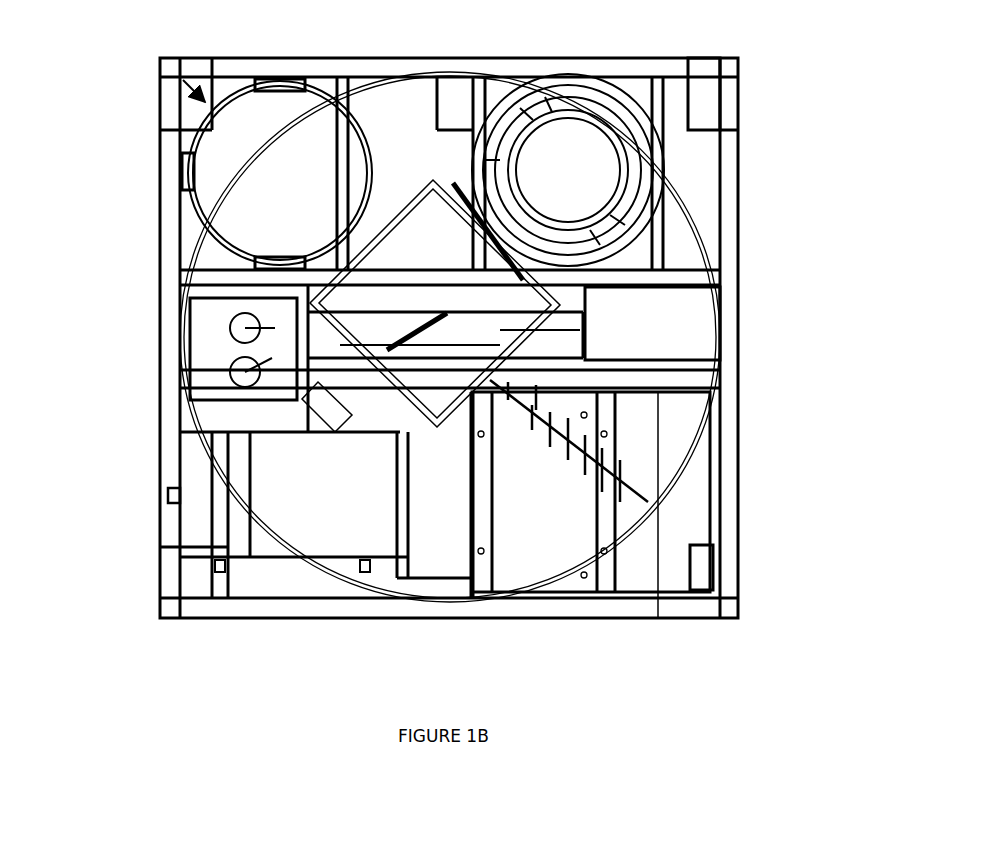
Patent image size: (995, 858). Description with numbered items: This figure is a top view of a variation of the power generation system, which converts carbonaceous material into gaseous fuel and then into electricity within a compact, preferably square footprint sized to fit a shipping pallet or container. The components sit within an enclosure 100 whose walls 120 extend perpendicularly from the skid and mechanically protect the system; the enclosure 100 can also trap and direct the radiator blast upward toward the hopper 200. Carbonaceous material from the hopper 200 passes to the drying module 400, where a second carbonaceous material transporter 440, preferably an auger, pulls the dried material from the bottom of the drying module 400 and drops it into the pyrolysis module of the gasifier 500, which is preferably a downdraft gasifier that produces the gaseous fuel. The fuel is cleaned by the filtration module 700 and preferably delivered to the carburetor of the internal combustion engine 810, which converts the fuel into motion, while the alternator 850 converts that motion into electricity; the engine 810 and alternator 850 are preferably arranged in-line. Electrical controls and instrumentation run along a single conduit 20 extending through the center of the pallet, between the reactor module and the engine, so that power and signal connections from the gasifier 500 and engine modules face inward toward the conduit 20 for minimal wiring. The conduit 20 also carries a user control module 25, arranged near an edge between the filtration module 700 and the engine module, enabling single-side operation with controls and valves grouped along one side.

The enclosure 100 is at (698, 51).
The walls 120 is at (746, 241).
The hopper 200 is at (186, 250).
The filtration module 700 is at (208, 183).
The gasifier 500 is at (686, 174).
The user control module 25 is at (208, 335).
The conduit 20 is at (316, 368).
The drying module 400 is at (572, 300).
The second carbonaceous material transporter 440 is at (427, 358).
The alternator 850 is at (268, 541).
The internal combustion engine 810 is at (702, 550).